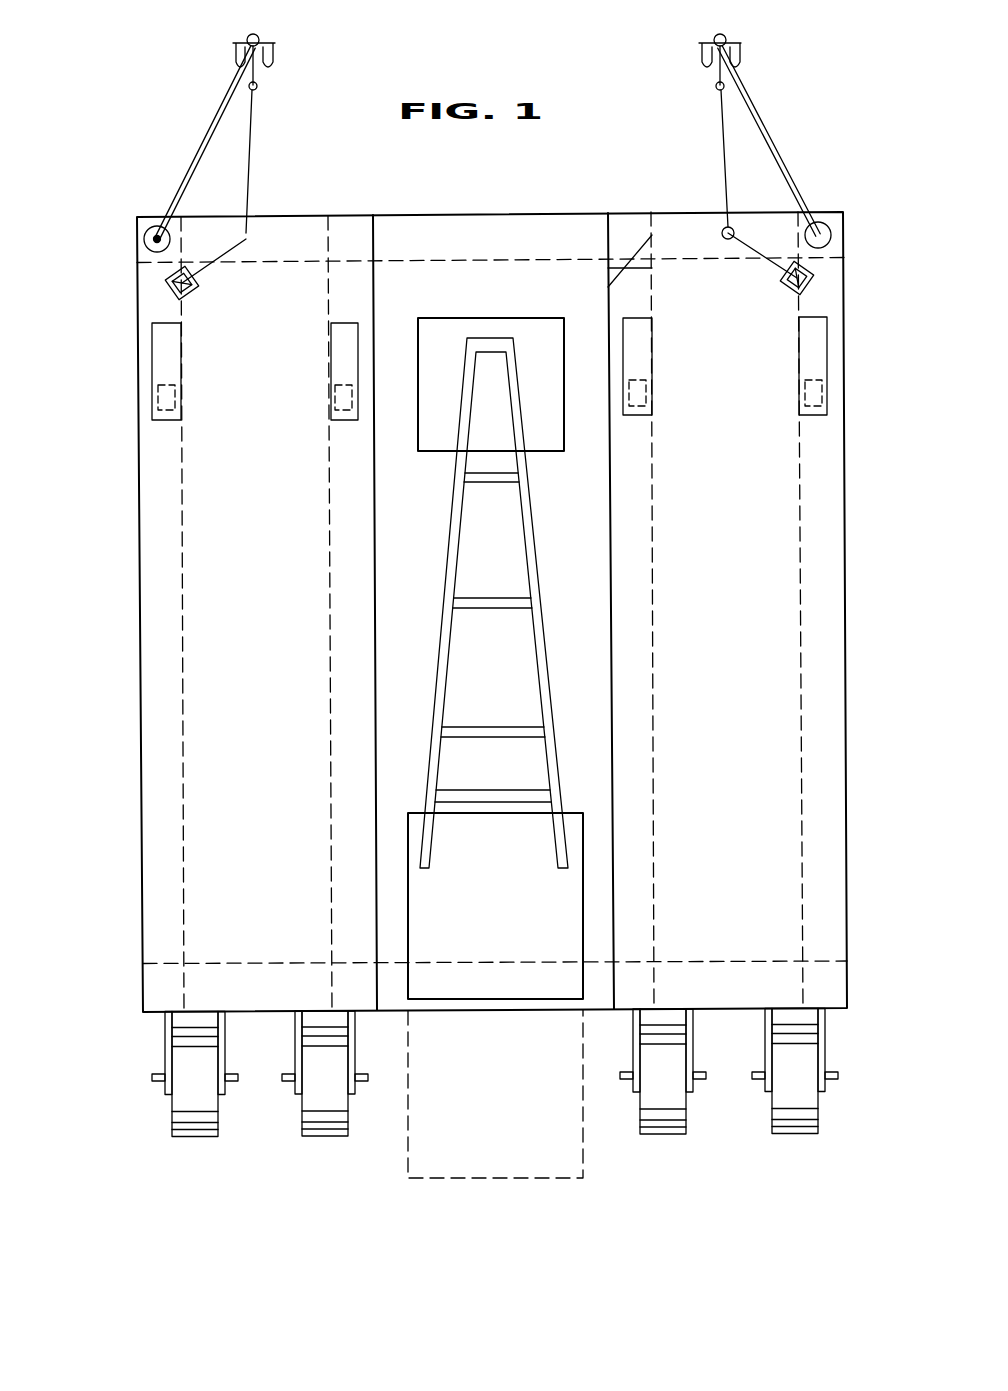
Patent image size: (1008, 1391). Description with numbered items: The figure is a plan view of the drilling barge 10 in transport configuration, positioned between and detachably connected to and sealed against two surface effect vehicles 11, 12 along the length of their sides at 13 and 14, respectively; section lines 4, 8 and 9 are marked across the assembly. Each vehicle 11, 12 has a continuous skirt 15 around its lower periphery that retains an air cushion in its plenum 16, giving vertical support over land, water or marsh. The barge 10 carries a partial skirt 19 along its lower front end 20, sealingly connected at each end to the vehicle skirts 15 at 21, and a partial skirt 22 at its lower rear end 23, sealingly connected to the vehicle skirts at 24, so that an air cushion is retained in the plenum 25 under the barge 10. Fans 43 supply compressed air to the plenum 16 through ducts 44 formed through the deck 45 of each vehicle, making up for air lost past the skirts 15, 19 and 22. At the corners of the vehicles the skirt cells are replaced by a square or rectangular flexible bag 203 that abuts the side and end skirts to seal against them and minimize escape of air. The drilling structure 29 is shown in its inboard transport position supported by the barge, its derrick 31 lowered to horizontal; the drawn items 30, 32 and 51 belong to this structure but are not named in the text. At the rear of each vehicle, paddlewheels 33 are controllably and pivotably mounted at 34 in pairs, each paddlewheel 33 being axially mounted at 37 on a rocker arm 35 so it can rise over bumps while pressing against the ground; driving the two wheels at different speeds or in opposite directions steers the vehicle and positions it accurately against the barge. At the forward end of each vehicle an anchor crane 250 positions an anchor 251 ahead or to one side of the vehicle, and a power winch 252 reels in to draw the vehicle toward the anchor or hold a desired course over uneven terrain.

The drilling barge 10 is at (307, 277).
The surface effect vehicle 11 is at (208, 215).
The surface effect vehicle 12 is at (728, 226).
The side connection 13 is at (357, 225).
The side connection 14 is at (651, 240).
The continuous skirt 15 is at (203, 238).
The plenum 16 is at (233, 882).
The partial skirt 19 is at (555, 235).
The lower front end 20 is at (498, 213).
The skirt connection 21 is at (380, 223).
The partial skirt 22 is at (403, 995).
The lower rear end 23 is at (385, 1012).
The skirt connection 24 is at (375, 993).
The plenum 25 is at (557, 302).
The drilling structure 29 is at (495, 1000).
The storage compartment 30 is at (552, 1182).
The derrick 31 is at (567, 803).
The ladder foot 32 is at (567, 867).
The paddlewheel 33 is at (190, 1140).
The pivot mount 34 is at (163, 1017).
The rocker arm 35 is at (167, 1047).
The axial mount 37 is at (240, 1082).
The fan 43 is at (343, 353).
The duct 44 is at (818, 392).
The deck 45 is at (213, 460).
The ladder 51 is at (547, 660).
The corner bag 203 is at (370, 300).
The anchor crane 250 is at (215, 118).
The anchor 251 is at (260, 36).
The power winch 252 is at (172, 272).
The section line 4- 4 is at (879, 189).
The section line 8- 8 is at (148, 605).
The section line 9- 9 is at (138, 1020).